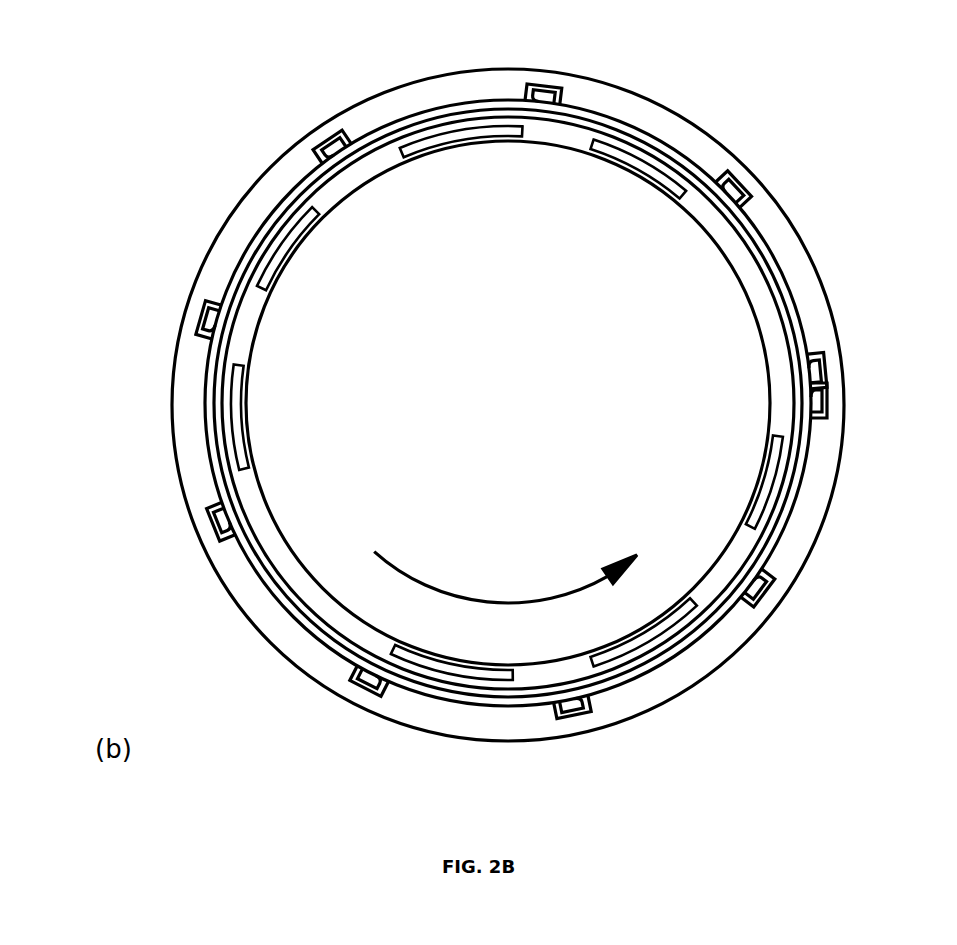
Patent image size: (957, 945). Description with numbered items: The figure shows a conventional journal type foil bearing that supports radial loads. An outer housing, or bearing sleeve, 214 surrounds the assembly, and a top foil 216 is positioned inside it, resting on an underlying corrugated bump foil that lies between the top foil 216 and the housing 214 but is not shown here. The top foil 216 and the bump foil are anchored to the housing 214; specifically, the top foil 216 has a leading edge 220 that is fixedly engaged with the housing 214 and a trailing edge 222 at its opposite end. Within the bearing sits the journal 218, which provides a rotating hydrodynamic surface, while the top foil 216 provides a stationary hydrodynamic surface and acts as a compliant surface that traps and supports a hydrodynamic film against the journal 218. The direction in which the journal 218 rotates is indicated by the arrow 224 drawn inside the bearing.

The housing 214 is at (634, 90).
The top foil 216 is at (307, 167).
The journal 218 is at (606, 261).
The leading edge 220 is at (336, 137).
The trailing edge 222 is at (232, 437).
The arrow 224 is at (521, 563).